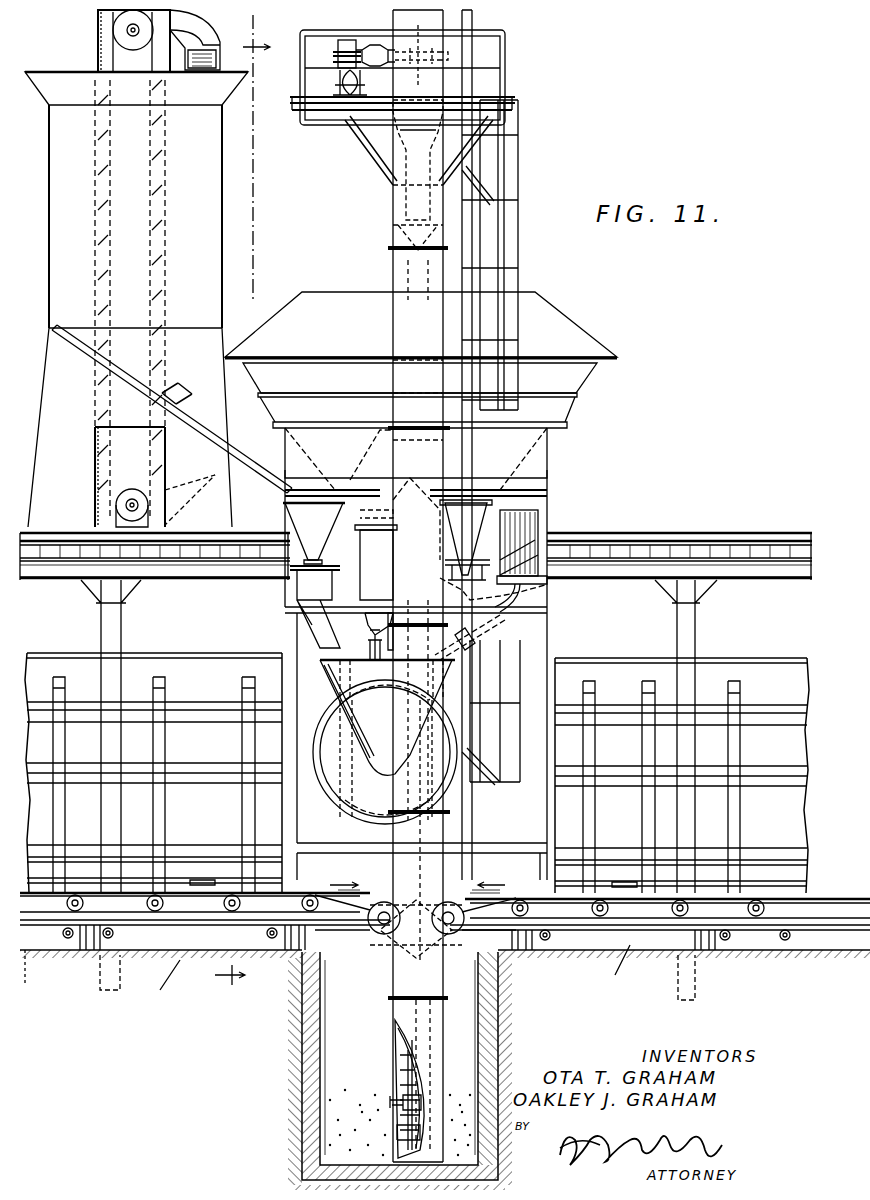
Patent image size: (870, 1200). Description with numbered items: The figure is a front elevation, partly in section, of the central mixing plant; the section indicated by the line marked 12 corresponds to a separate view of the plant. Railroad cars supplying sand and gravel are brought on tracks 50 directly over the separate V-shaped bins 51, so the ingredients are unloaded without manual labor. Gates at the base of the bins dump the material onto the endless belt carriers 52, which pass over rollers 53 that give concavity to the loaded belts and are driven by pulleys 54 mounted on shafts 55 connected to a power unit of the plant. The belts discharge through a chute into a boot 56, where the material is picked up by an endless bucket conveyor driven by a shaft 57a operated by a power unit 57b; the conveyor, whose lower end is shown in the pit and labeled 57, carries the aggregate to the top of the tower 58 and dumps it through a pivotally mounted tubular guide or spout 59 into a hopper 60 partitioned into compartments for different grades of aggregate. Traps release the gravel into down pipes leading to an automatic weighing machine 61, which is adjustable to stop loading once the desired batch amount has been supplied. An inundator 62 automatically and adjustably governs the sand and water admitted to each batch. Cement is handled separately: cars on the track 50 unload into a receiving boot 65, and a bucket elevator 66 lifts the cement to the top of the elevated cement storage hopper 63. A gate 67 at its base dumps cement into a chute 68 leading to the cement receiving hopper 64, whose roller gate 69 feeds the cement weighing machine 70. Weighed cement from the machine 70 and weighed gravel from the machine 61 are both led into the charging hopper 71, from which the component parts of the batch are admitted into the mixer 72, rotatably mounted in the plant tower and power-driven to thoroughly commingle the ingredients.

The section line 12- 12 is at (242, 509).
The tracks 50 is at (720, 545).
The V-shaped bins 51 is at (417, 773).
The endless belt carriers 52 is at (445, 946).
The rollers 53 is at (155, 900).
The pulleys 54 is at (448, 905).
The shafts 55 is at (416, 950).
The boot 56 is at (440, 1022).
The lower sprocket 57 is at (400, 1102).
The shaft 57a is at (385, 48).
The power unit 57b is at (338, 52).
The tower 58 is at (300, 97).
The tubular guide or spout 59 is at (400, 210).
The hopper 60 is at (421, 366).
The automatic weighing machine 61 is at (400, 573).
The inundator 62 is at (490, 510).
The cement storage hopper 63 is at (136, 268).
The cement receiving hopper 64 is at (314, 531).
The receiving boot 65 is at (95, 482).
The bucket elevator 66 is at (105, 447).
The gate 67 is at (185, 390).
The chute 68 is at (255, 452).
The roller gate 69 is at (322, 560).
The cement weighing machine 70 is at (332, 588).
The charging hopper 71 is at (342, 688).
The mixer 72 is at (348, 784).